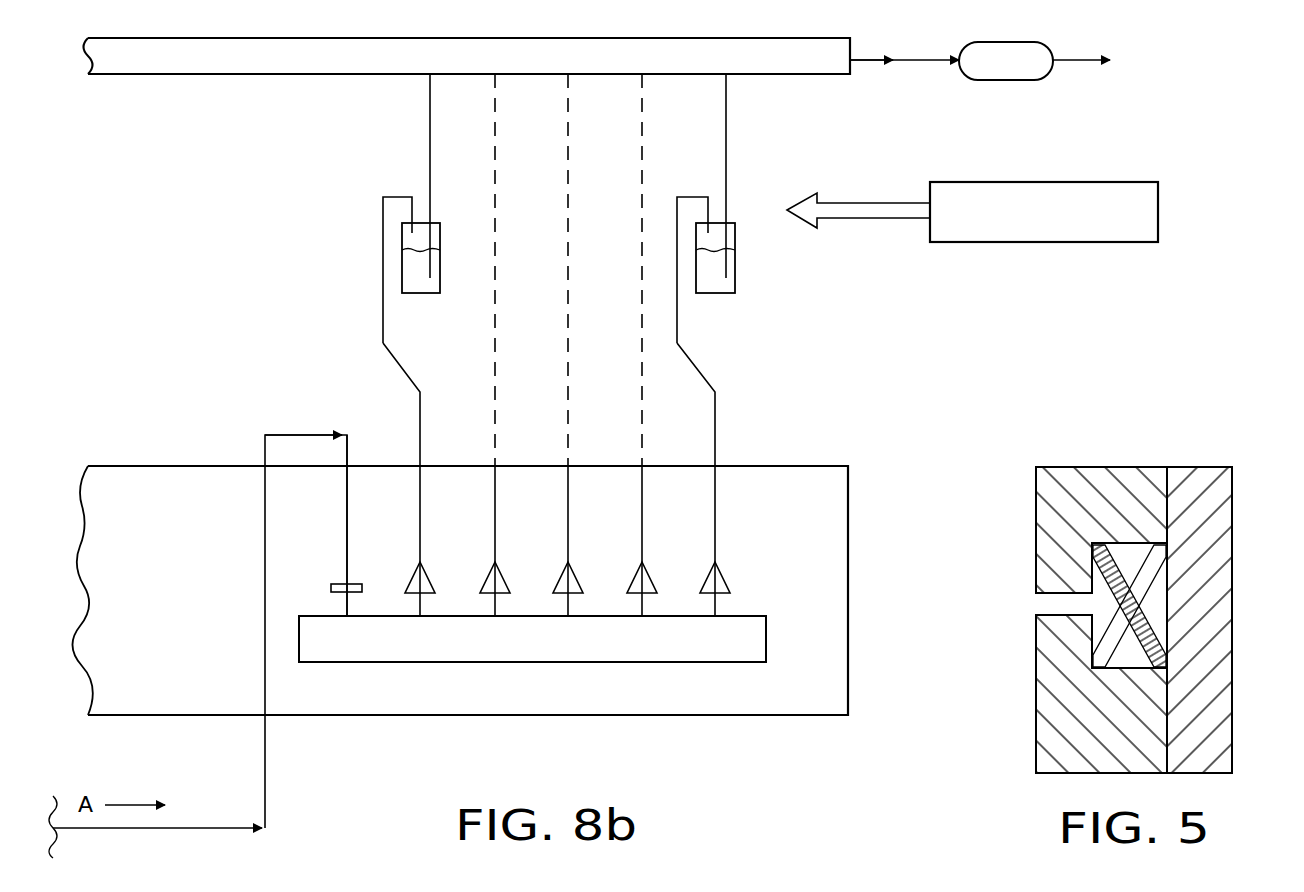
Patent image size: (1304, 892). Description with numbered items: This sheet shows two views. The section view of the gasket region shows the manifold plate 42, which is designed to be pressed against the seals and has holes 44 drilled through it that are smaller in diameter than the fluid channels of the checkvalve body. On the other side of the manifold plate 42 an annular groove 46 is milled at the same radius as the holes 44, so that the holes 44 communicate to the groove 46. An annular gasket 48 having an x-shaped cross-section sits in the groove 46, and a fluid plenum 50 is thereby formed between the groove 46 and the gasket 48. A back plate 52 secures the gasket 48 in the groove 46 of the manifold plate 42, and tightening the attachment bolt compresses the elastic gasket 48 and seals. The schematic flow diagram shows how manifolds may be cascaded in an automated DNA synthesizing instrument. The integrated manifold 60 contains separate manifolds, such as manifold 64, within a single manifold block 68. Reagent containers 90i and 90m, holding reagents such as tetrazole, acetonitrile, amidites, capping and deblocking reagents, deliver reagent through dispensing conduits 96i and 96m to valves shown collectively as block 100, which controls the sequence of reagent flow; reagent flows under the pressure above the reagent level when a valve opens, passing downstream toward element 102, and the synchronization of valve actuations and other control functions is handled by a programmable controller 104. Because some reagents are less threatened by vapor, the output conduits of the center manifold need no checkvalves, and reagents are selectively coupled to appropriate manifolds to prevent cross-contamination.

In FIG. 8B, the valves block 100 is at (183, 76).
In FIG. 8B, the downstream process 102 is at (1006, 61).
In FIG. 8B, the programmable controller 104 is at (1036, 182).
In FIG. 8B, the dispensing conduit 96i is at (430, 153).
In FIG. 8B, the dispensing conduit 96m is at (725, 153).
In FIG. 8B, the reagent container 90i is at (423, 294).
In FIG. 8B, the reagent container 90m is at (717, 294).
In FIG. 8B, the manifold 64 is at (415, 665).
In FIG. 8B, the manifold block 68 is at (818, 548).
In FIG. 8B, the integrated manifold 60 is at (714, 744).
In FIG. 5, the manifold plate 42 is at (1098, 482).
In FIG. 5, the hole 44 is at (1047, 606).
In FIG. 5, the annular groove 46 is at (1133, 556).
In FIG. 5, the annular gasket 48 is at (1150, 640).
In FIG. 5, the fluid plenum 50 is at (1104, 608).
In FIG. 5, the back plate 52 is at (1215, 565).